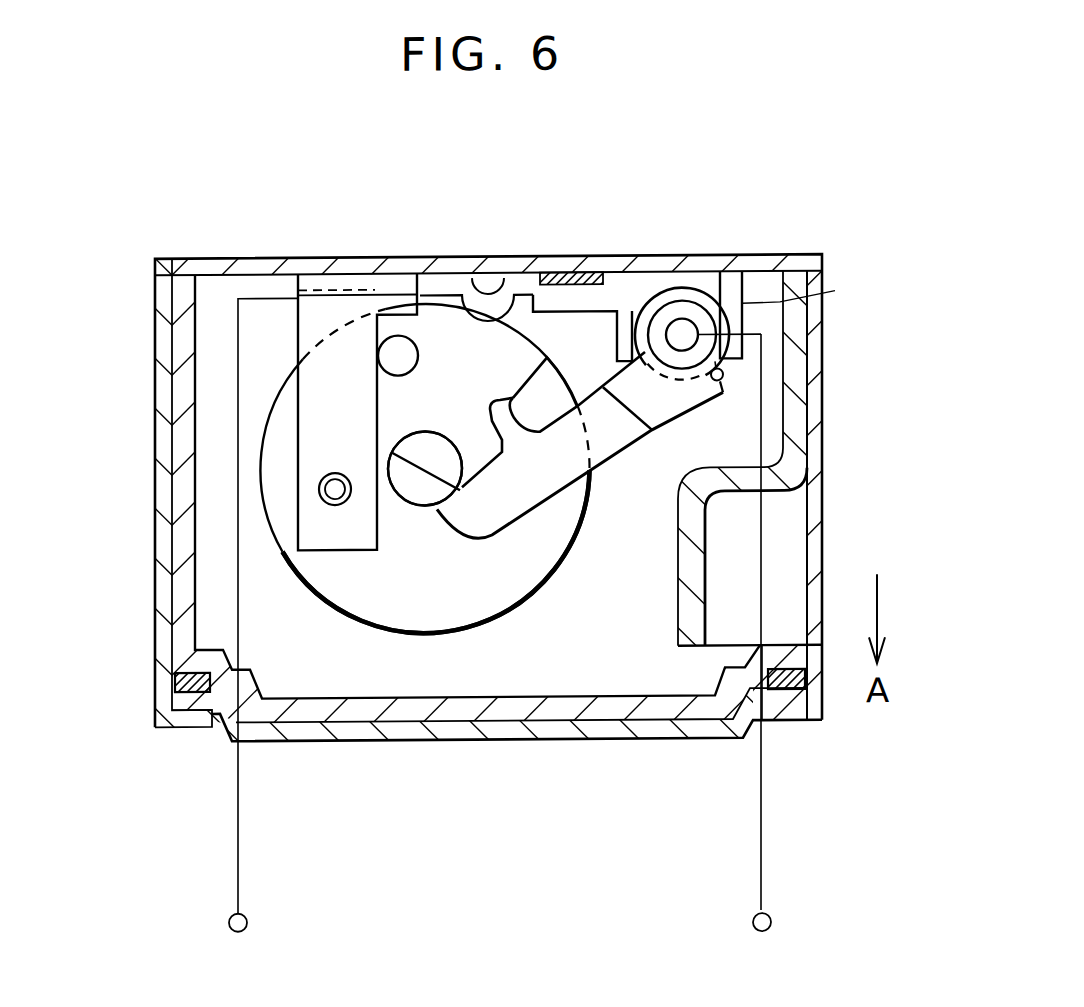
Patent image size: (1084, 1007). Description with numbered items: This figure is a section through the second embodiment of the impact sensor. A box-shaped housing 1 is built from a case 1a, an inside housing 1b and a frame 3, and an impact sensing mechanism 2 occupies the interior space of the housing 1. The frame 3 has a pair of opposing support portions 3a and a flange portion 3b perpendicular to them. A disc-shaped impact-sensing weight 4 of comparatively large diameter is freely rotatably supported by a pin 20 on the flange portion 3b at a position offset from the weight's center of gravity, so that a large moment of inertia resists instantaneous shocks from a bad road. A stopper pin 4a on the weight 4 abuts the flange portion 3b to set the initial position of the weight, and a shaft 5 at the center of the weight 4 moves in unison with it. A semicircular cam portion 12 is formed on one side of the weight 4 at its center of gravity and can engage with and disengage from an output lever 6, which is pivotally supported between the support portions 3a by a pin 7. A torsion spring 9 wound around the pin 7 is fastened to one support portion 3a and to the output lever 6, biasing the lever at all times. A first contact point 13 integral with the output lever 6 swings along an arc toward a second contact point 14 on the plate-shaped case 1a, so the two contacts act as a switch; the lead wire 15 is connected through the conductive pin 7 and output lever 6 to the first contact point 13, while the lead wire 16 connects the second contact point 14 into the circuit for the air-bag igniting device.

The housing 1 is at (793, 228).
The case 1a is at (822, 383).
The inside housing 1b is at (692, 553).
The impact sensing mechanism 2 is at (368, 648).
The frame 3 is at (542, 502).
The support portion 3a is at (628, 257).
The flange portion 3b is at (323, 373).
The impact-sensing weight 4 is at (487, 602).
The stopper pin 4a is at (398, 335).
The shaft 5 is at (438, 430).
The output lever 6 is at (607, 447).
The pin 7 is at (720, 305).
The torsion spring 9 is at (660, 257).
The cam portion 12 is at (420, 490).
The first contact point 13 is at (552, 338).
The second contact point 14 is at (520, 257).
The lead wire 15 is at (763, 842).
The lead wire 16 is at (238, 838).
The pin 20 is at (318, 489).